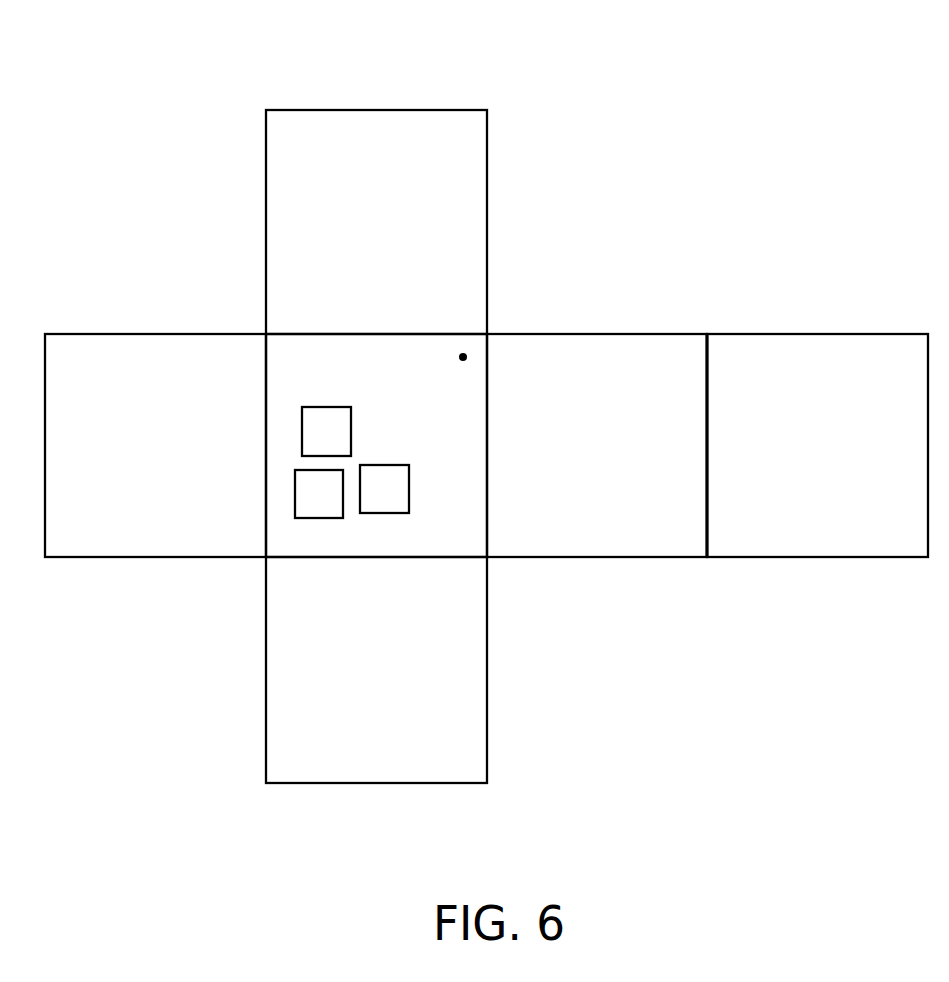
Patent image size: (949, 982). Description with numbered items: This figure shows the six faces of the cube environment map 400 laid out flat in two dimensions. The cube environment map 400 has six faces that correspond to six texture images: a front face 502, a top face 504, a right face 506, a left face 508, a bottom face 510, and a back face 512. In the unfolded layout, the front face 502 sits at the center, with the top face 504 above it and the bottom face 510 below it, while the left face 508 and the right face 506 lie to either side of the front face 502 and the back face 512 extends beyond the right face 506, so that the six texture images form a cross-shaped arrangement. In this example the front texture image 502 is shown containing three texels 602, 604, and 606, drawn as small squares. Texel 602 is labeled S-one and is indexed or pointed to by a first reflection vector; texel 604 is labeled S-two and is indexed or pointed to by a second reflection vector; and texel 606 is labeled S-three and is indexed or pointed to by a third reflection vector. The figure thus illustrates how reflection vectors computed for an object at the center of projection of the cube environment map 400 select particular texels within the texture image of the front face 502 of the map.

The cube environment map 400 is at (668, 88).
The front face 502 is at (463, 357).
The top face 504 is at (487, 221).
The right face 506 is at (597, 558).
The left face 508 is at (155, 561).
The bottom face 510 is at (377, 785).
The back face 512 is at (817, 558).
The texel 602 is at (325, 518).
The texel 604 is at (351, 427).
The texel 606 is at (409, 485).